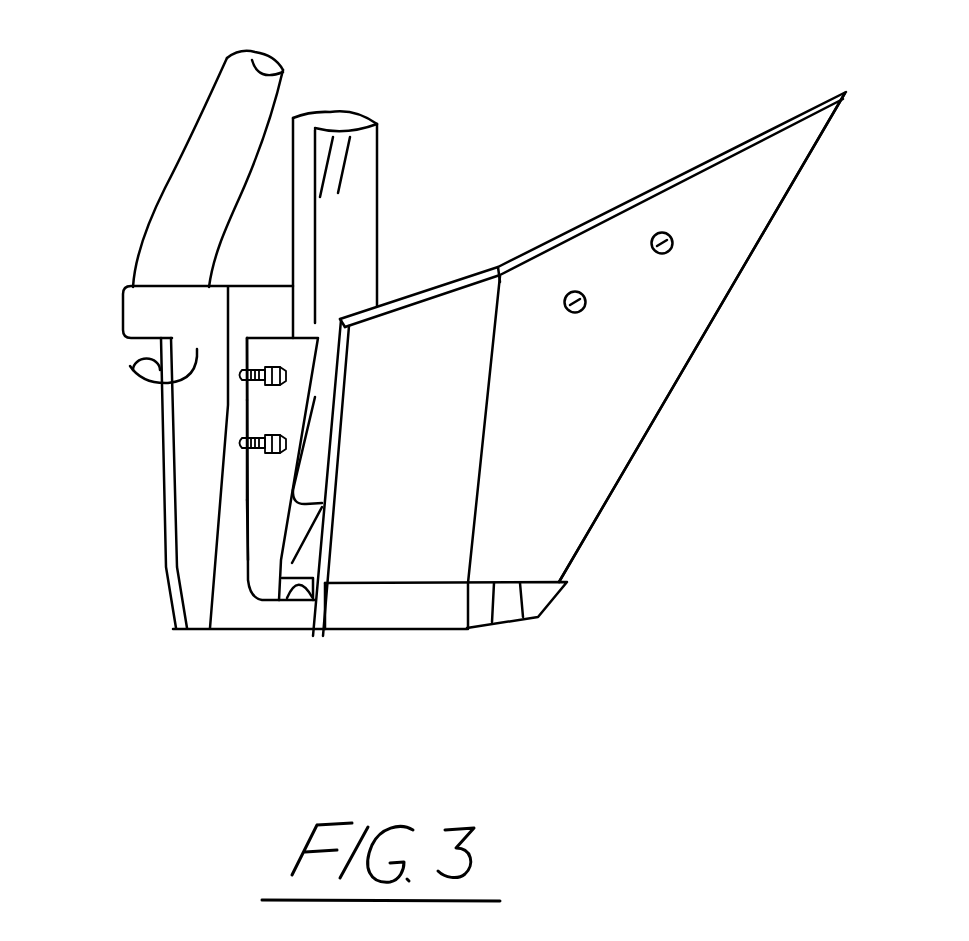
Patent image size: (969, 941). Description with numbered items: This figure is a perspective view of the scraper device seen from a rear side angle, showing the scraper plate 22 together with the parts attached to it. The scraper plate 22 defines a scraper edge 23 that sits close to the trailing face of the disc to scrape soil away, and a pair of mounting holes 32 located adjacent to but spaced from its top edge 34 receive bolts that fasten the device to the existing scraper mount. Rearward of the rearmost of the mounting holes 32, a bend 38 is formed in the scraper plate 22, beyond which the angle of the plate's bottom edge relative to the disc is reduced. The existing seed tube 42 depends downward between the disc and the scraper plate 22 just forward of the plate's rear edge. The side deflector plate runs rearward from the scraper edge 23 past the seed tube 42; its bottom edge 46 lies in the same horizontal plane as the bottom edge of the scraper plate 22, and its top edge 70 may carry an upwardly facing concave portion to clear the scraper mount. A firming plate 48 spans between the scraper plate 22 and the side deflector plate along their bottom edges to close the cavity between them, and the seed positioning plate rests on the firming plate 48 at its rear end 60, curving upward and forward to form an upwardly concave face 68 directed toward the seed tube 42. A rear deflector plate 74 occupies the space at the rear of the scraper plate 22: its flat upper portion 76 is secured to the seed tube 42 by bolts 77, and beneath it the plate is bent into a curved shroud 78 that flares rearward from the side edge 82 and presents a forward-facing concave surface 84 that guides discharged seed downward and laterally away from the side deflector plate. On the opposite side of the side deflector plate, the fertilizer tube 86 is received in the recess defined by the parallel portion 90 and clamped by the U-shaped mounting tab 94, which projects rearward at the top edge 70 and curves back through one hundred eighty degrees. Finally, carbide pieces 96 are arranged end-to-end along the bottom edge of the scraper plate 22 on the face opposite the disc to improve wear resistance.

The scraper plate 22 is at (716, 195).
The scraper edge 23 is at (650, 427).
The mounting holes 32 is at (590, 297).
The top edge 34 is at (534, 256).
The bend 38 is at (482, 433).
The seed tube 42 is at (353, 188).
The bottom edge of the side deflector plate 46 is at (193, 630).
The firming plate 48 is at (266, 613).
The rear end of the firming plate 60 is at (303, 612).
The upwardly concave face 68 is at (313, 563).
The top edge of the side deflector plate 70 is at (266, 352).
The rear deflector plate 74 is at (290, 409).
The flat upper portion 76 is at (240, 345).
The bolts 77 is at (258, 385).
The curved shroud 78 is at (266, 543).
The side edge 82 is at (247, 493).
The concave surface 84 is at (318, 612).
The fertilizer tube 86 is at (227, 118).
The parallel portion 90 is at (162, 410).
The U-shaped mounting tab 94 is at (138, 308).
The carbide pieces 96 is at (505, 612).